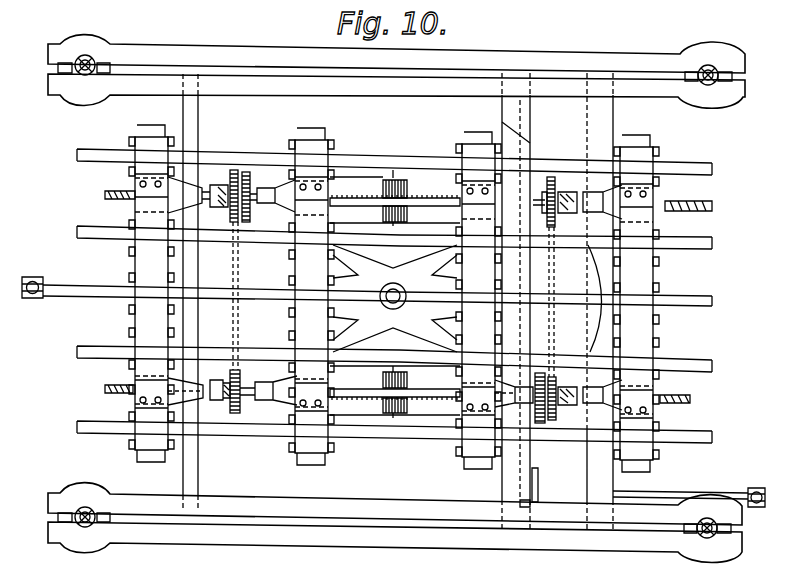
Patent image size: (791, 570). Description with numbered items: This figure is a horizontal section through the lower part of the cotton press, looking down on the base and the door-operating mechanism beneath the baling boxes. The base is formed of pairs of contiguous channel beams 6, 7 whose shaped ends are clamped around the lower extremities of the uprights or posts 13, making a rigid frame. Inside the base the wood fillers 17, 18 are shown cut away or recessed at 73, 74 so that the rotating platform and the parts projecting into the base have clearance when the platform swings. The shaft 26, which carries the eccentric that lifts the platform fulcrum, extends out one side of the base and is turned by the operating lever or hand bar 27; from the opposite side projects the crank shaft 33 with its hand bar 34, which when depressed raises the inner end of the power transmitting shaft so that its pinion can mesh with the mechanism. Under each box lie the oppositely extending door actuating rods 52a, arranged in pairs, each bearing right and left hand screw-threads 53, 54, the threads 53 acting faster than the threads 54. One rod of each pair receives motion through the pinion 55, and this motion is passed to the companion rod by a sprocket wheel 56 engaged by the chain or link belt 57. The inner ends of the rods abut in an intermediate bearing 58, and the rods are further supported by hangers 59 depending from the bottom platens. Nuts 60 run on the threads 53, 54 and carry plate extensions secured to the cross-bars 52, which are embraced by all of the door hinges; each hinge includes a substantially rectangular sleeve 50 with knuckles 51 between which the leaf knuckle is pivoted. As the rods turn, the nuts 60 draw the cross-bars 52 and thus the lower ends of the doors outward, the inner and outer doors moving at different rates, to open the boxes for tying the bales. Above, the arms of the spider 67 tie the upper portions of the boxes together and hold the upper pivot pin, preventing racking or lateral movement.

The channel beam 6 is at (48, 80).
The channel beam 7 is at (55, 54).
The upright or post 13 is at (705, 86).
The wood filler 17 is at (527, 452).
The wood filler 18 is at (580, 477).
The shaft 26 is at (63, 285).
The operating lever or hand bar 27 is at (33, 298).
The crank shaft 33 is at (663, 493).
The operating lever or hand bar 34 is at (760, 487).
The rectangular sleeve 50 is at (637, 320).
The knuckle 51 is at (663, 318).
The cross-bar 52 is at (458, 148).
The door actuating rod 52a is at (462, 408).
The screw-thread 53 is at (455, 203).
The screw-thread 54 is at (380, 200).
The pinion 55 is at (248, 222).
The sprocket wheel 56 is at (230, 213).
The chain or link belt 57 is at (240, 343).
The intermediate bearing 58 is at (400, 180).
The hanger 59 is at (223, 400).
The nut 60 is at (264, 400).
The spider 67 is at (410, 302).
The recess 73 is at (520, 157).
The recess 74 is at (596, 330).